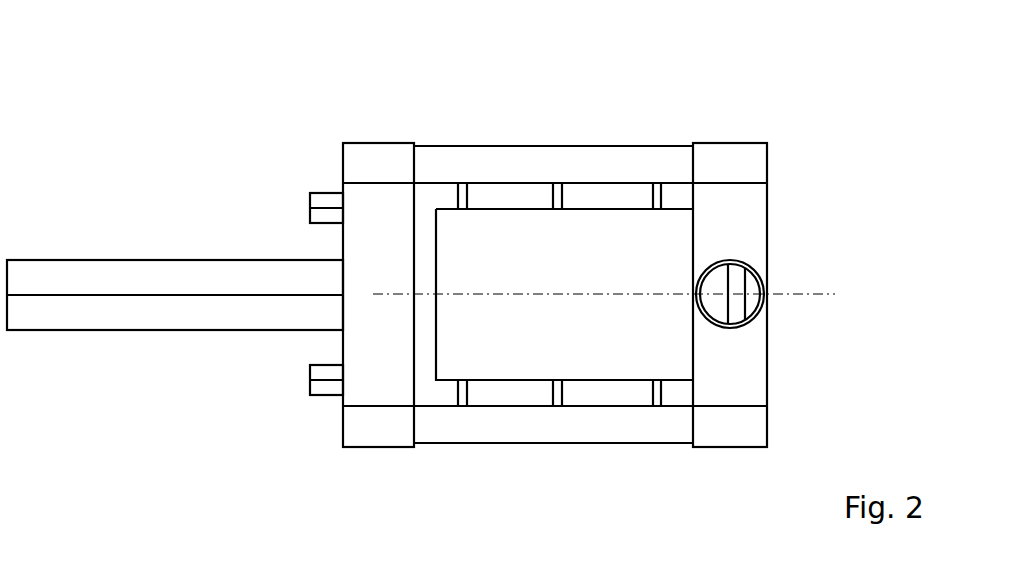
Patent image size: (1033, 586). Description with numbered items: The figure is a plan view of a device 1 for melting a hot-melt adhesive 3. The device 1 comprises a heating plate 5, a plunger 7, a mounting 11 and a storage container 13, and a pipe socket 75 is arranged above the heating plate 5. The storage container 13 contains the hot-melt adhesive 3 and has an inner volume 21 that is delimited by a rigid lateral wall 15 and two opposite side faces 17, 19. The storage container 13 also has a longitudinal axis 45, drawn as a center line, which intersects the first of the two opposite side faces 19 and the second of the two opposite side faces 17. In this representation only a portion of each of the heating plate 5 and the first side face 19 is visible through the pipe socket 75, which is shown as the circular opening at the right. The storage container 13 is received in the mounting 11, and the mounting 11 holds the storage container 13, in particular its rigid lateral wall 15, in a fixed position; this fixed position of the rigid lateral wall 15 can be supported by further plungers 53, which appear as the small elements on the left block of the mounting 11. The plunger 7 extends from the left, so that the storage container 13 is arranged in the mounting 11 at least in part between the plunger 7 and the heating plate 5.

The device for melting a hot-melt adhesive 1 is at (184, 123).
The hot-melt adhesive 3 is at (578, 342).
The heating plate 5 is at (759, 308).
The plunger 7 is at (97, 275).
The mounting 11 is at (462, 192).
The storage container 13 is at (596, 194).
The rigid lateral wall 15 is at (514, 368).
The second side face 17 is at (432, 357).
The first side face 19 is at (732, 282).
The inner volume 21 is at (641, 343).
The longitudinal axis 45 is at (831, 295).
The further plungers 53 is at (310, 200).
The pipe socket 75 is at (739, 326).